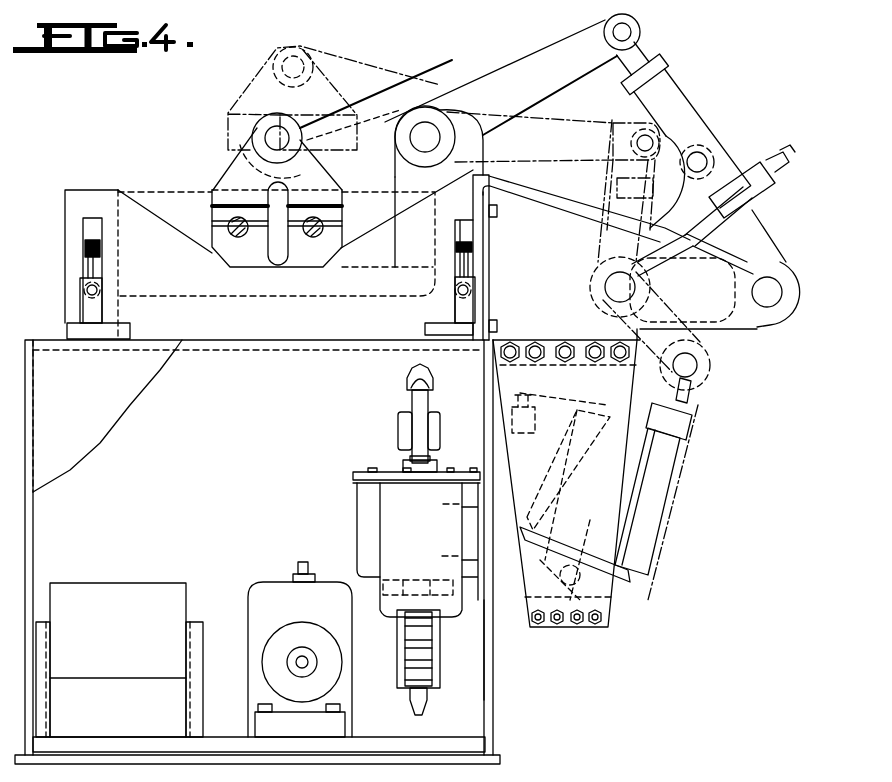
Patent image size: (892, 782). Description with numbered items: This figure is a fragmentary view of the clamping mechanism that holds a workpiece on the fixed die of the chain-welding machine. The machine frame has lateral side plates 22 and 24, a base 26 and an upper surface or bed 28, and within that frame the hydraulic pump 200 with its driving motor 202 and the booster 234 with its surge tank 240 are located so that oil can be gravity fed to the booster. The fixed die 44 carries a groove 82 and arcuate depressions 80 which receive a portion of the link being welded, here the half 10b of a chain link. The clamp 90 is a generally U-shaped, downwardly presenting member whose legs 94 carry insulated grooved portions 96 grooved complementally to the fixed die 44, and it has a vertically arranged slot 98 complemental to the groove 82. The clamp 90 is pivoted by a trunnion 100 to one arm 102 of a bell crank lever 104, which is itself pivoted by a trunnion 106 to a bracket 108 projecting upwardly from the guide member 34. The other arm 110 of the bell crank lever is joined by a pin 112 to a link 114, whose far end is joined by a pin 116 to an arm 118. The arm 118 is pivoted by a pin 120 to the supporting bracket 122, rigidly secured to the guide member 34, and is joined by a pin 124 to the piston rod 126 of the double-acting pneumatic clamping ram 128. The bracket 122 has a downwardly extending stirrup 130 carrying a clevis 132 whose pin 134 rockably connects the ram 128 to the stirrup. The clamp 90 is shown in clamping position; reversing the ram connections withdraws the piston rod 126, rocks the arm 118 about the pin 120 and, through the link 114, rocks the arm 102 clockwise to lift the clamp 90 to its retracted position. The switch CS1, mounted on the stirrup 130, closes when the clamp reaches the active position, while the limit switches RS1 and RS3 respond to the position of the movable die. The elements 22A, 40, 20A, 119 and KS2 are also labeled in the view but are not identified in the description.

The lateral side plate 22 is at (33, 533).
The cabinet base 22A is at (258, 759).
The lateral side plate 24 is at (490, 653).
The base 26 is at (487, 762).
The upper surface or bed 28 is at (292, 345).
The guide member 34 is at (70, 220).
The die assembly 40 is at (278, 325).
The fixed die 44 is at (213, 238).
The arcuate depressions 80 is at (233, 233).
The groove 82 is at (288, 267).
The clamp 90 is at (250, 88).
The legs 94 is at (213, 190).
The grooved portions 96 is at (216, 208).
The vertically arranged slot 98 is at (328, 165).
The trunnion 100 is at (273, 135).
The arm 102 is at (362, 92).
The bell crank lever 104 is at (544, 47).
The trunnion 106 is at (427, 134).
The bracket 108 is at (487, 150).
The arm 110 is at (560, 40).
The pin 112 is at (631, 31).
The link 114 is at (668, 92).
The pin 116 is at (702, 157).
The arm 118 is at (752, 213).
The valve 119 is at (772, 168).
The pin 120 is at (768, 305).
The supporting bracket 122 is at (549, 198).
The pin 124 is at (670, 274).
The piston rod 126 is at (700, 342).
The clamping ram 128 is at (654, 468).
The stirrup 130 is at (612, 597).
The clevis 132 is at (572, 628).
The pin 134 is at (589, 538).
The switch CS1 is at (527, 434).
The switch KS2 is at (80, 277).
The limit switch RS1 is at (100, 268).
The limit switch RS3 is at (468, 265).
The half of a chain link 10b is at (273, 198).
The control box 20A is at (97, 593).
The hydraulic pump 200 is at (320, 608).
The driving motor 202 is at (302, 662).
The booster 234 is at (373, 505).
The surge tank 240 is at (400, 530).